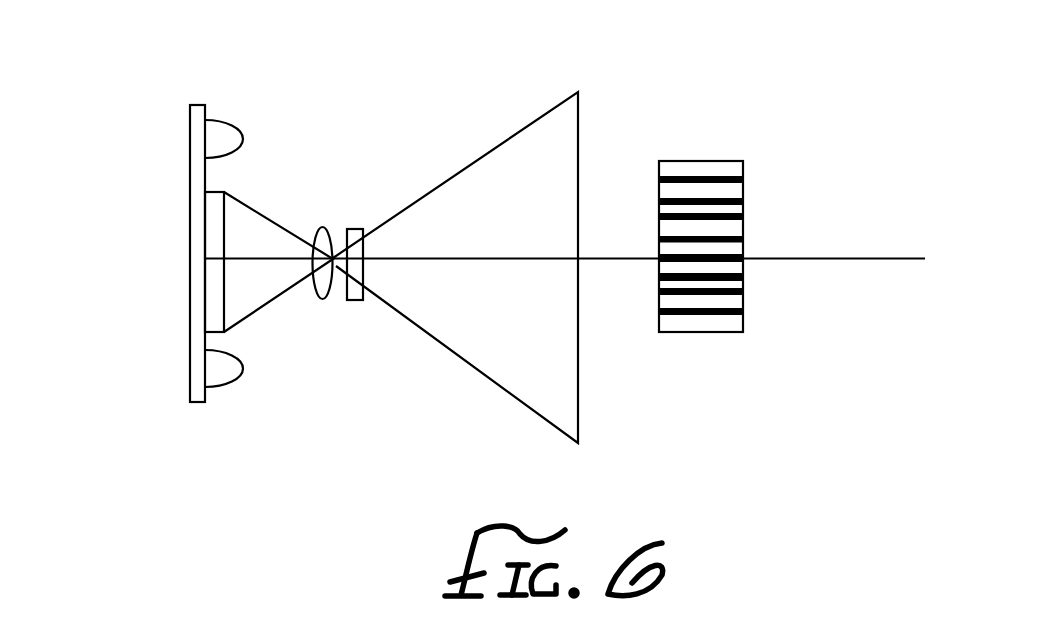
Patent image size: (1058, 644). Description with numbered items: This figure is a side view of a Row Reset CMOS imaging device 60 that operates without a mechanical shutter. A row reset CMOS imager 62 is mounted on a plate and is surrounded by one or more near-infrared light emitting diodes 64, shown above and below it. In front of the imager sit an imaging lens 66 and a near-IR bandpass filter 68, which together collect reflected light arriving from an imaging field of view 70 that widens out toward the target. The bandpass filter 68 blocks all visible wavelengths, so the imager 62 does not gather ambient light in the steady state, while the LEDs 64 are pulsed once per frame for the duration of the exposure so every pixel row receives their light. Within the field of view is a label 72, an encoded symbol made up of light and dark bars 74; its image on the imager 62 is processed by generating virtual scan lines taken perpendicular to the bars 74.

The imaging device 60 is at (108, 82).
The row reset CMOS imager 62 is at (215, 293).
The near-infrared light emitting diodes 64 is at (227, 137).
The imaging lens 66 is at (323, 243).
The near-IR bandpass filter 68 is at (357, 291).
The imaging field of view 70 is at (528, 149).
The label 72 is at (743, 287).
The bars 74 is at (697, 318).